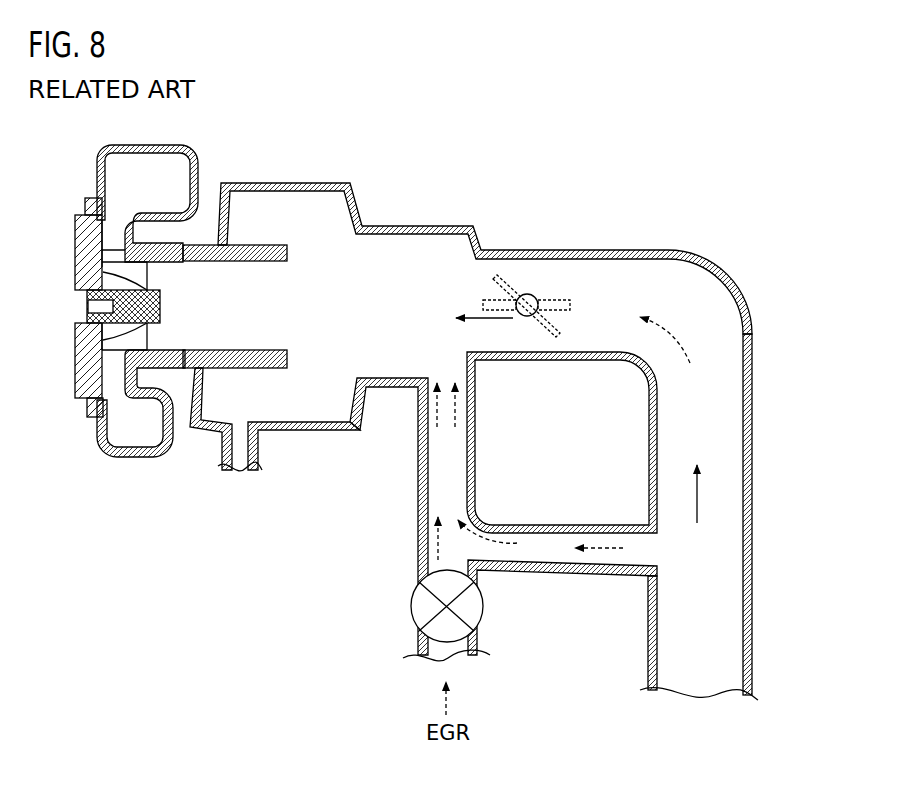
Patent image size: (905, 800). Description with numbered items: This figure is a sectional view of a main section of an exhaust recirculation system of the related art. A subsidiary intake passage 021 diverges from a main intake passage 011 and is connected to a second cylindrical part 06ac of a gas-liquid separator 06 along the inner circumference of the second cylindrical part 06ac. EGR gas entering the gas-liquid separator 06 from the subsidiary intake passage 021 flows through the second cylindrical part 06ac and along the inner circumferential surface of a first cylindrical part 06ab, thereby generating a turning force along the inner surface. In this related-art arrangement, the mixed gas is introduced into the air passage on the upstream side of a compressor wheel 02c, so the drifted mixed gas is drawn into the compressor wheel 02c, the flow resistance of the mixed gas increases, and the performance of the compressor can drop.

The gas-liquid separator 06 is at (428, 183).
The main intake passage 011 is at (736, 425).
The subsidiary intake passage 021 is at (563, 560).
The first cylindrical part 06ab is at (317, 418).
The second cylindrical part 06ac is at (386, 378).
The compressor wheel 02c is at (120, 365).